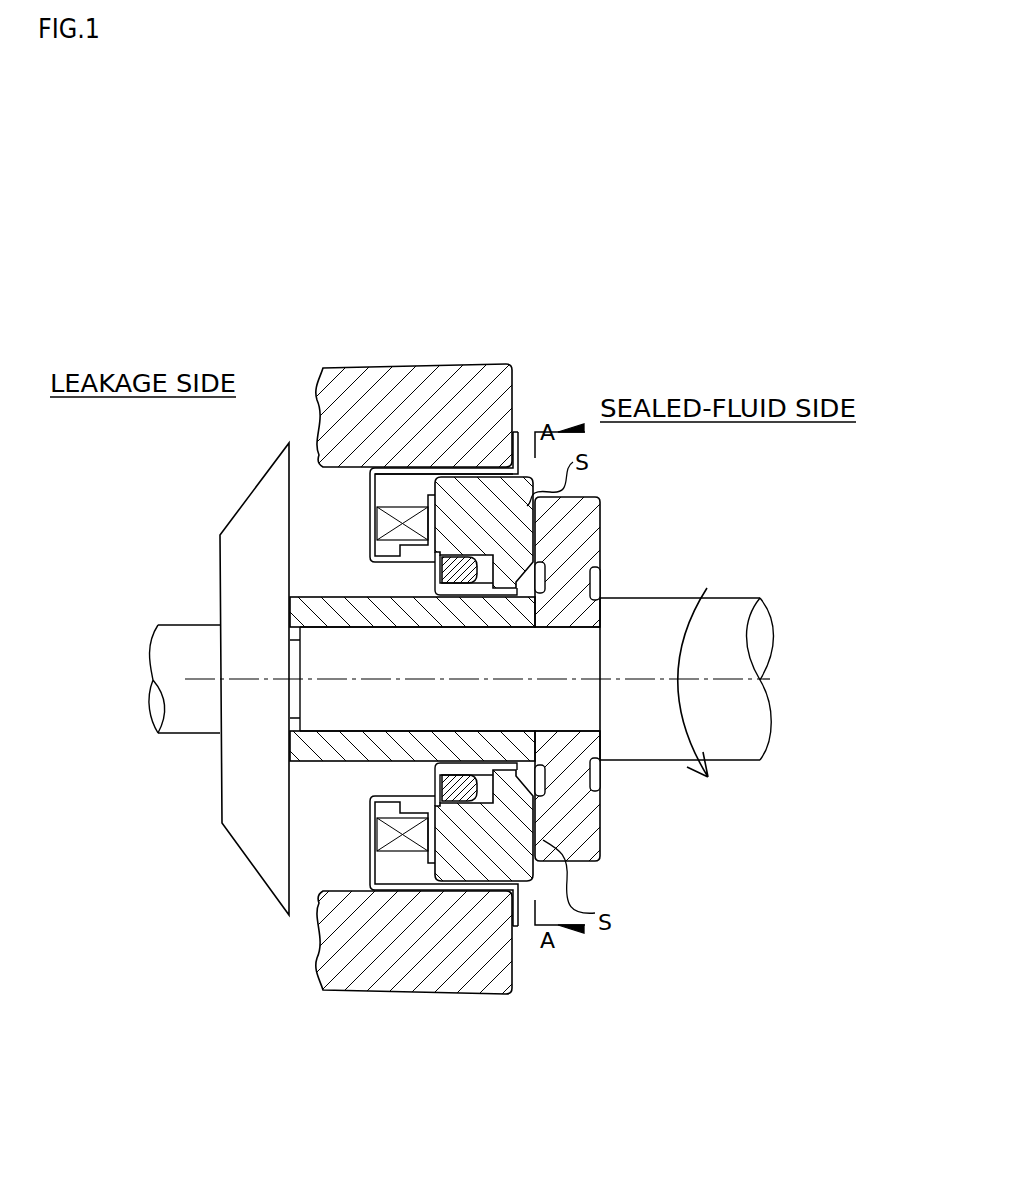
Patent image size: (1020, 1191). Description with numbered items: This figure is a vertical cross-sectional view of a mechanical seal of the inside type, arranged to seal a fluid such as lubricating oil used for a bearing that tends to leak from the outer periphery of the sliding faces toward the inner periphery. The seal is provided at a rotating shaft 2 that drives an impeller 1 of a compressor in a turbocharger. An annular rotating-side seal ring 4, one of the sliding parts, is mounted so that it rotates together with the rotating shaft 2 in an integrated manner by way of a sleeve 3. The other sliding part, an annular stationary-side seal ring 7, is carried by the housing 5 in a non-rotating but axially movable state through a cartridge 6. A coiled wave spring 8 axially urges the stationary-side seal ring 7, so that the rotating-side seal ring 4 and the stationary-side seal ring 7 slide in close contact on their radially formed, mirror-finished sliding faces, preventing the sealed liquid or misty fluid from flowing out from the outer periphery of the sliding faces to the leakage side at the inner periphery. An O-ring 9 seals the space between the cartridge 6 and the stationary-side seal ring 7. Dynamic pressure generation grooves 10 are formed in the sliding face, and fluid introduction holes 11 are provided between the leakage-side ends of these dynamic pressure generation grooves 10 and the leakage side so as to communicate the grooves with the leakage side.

The impeller 1 is at (248, 530).
The rotating shaft 2 is at (503, 675).
The sleeve 3 is at (310, 607).
The rotating-side seal ring 4 is at (597, 517).
The housing 5 is at (393, 385).
The cartridge 6 is at (372, 503).
The stationary-side seal ring 7 is at (533, 480).
The coiled wave spring 8 is at (425, 468).
The O-ring 9 is at (433, 570).
The dynamic pressure generation groove 10 is at (537, 560).
The fluid introduction hole 11 is at (600, 578).